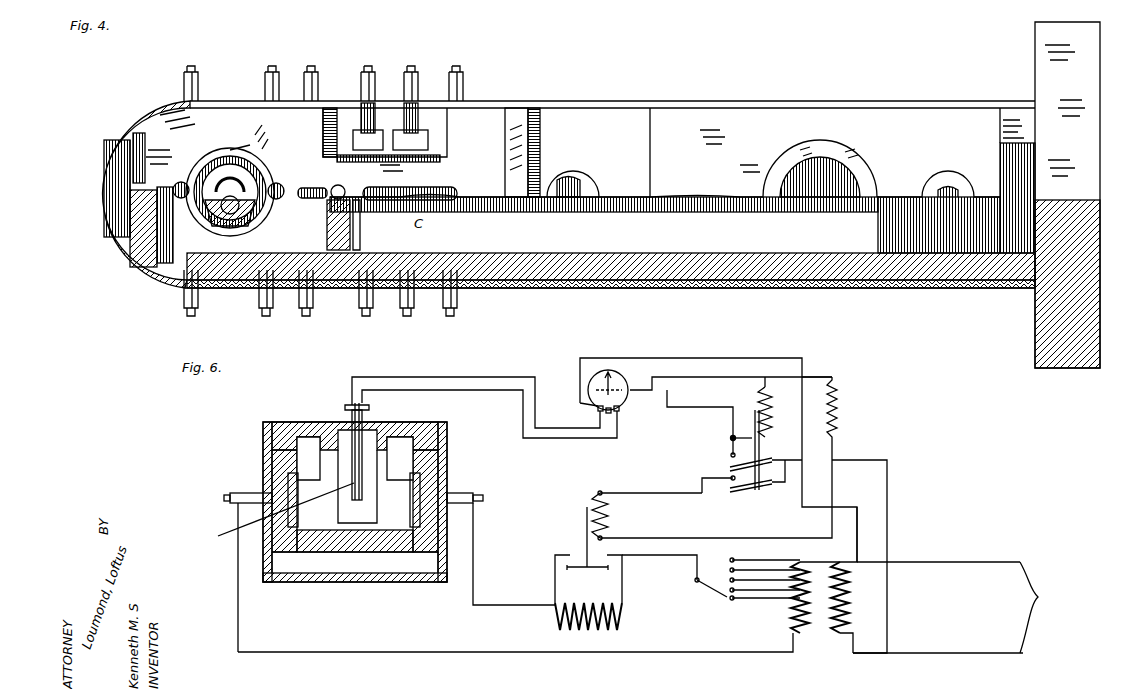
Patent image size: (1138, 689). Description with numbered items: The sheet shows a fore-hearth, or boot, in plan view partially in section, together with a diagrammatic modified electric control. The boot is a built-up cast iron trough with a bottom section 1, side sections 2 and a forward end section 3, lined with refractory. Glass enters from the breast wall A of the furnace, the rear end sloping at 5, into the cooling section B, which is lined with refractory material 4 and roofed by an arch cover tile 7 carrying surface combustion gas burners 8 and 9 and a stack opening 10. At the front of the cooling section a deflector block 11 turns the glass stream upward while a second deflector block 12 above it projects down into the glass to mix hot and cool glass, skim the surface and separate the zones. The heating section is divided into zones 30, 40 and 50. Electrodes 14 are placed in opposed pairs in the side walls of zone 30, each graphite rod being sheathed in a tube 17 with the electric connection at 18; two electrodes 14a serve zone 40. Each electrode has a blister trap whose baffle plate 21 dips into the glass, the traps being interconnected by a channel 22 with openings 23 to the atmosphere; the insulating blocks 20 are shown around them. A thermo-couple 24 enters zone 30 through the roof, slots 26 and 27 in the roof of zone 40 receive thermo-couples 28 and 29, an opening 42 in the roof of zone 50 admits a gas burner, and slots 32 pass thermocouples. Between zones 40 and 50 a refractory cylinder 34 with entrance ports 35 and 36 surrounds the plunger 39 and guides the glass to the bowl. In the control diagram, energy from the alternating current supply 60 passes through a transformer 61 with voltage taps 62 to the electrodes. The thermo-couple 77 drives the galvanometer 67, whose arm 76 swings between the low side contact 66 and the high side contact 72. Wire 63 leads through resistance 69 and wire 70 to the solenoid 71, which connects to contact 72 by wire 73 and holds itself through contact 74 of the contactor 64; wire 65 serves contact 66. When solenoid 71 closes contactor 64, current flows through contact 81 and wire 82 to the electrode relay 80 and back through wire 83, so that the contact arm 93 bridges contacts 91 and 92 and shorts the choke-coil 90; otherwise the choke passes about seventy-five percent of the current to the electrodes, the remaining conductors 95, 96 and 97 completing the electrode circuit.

In FIG. 6, the bottom section 1 is at (340, 590).
In FIG. 4, the side section 2 is at (612, 108).
In FIG. 6, the side section 2 is at (263, 560).
In FIG. 4, the forward end section 3 is at (92, 205).
In FIG. 4, the refractory lining 4 is at (694, 280).
In FIG. 4, the sloping rear end 5 is at (940, 240).
In FIG. 4, the arch cover tile 7 is at (742, 115).
In FIG. 4, the surface combustion gas burner 8 is at (568, 178).
In FIG. 4, the surface combustion gas burner 9 is at (948, 188).
In FIG. 4, the stack opening 10 is at (830, 160).
In FIG. 4, the deflector block 11 is at (552, 245).
In FIG. 4, the deflector block 12 is at (518, 125).
In FIG. 4, the electrode 14 is at (184, 300).
In FIG. 6, the electrode 14 is at (288, 478).
In FIG. 4, the electrode 14a is at (268, 310).
In FIG. 6, the electrode 14a is at (420, 488).
In FIG. 4, the tube 17 is at (184, 85).
In FIG. 6, the tube 17 is at (250, 503).
In FIG. 4, the electric connection 18 is at (187, 68).
In FIG. 6, the electric connection 18 is at (224, 498).
In FIG. 4, the insulating block 20 is at (408, 128).
In FIG. 6, the insulating block 20 is at (272, 456).
In FIG. 6, the baffle plate 21 is at (328, 432).
In FIG. 4, the channel 22 is at (366, 118).
In FIG. 6, the channel 22 is at (300, 432).
In FIG. 4, the opening 23 is at (445, 187).
In FIG. 4, the thermo-couple 24 is at (430, 172).
In FIG. 4, the slot 26 is at (420, 187).
In FIG. 4, the slot 27 is at (330, 200).
In FIG. 6, the slot 27 is at (352, 412).
In FIG. 4, the thermo-couple 28 is at (346, 188).
In FIG. 6, the thermo-couple 28 is at (369, 408).
In FIG. 4, the thermo-couple 29 is at (312, 186).
In FIG. 4, the zone 30 is at (470, 245).
In FIG. 4, the slot 32 is at (200, 180).
In FIG. 4, the cylinder 34 is at (236, 206).
In FIG. 4, the entrance port 35 is at (240, 200).
In FIG. 4, the entrance port 36 is at (242, 208).
In FIG. 4, the plunger 39 is at (228, 214).
In FIG. 4, the zone 40 is at (318, 310).
In FIG. 4, the opening 42 is at (133, 150).
In FIG. 4, the zone 50 is at (138, 270).
In FIG. 6, the alternating current supply 60 is at (955, 607).
In FIG. 6, the transformer 61 is at (858, 594).
In FIG. 6, the voltage tap 62 is at (710, 592).
In FIG. 6, the wire 63 is at (868, 460).
In FIG. 6, the contactor 64 is at (758, 484).
In FIG. 6, the wire 65 is at (684, 358).
In FIG. 6, the low side contact 66 is at (598, 408).
In FIG. 6, the galvanometer 67 is at (615, 385).
In FIG. 6, the resistance 69 is at (838, 404).
In FIG. 6, the wire 70 is at (822, 377).
In FIG. 6, the solenoid 71 is at (766, 405).
In FIG. 6, the high side contact 72 is at (618, 411).
In FIG. 6, the wire 73 is at (728, 377).
In FIG. 6, the contact 74 is at (730, 455).
In FIG. 6, the common tap or arm contact 76 is at (598, 372).
In FIG. 6, the thermo-couple 77 is at (226, 536).
In FIG. 6, the electrode relay 80 is at (578, 512).
In FIG. 6, the contact 81 is at (728, 480).
In FIG. 6, the wire 82 is at (646, 493).
In FIG. 6, the wire 83 is at (675, 538).
In FIG. 6, the choke-coil 90 is at (577, 630).
In FIG. 6, the contact 91 is at (570, 556).
In FIG. 6, the contact 92 is at (607, 555).
In FIG. 6, the contact arm 93 is at (596, 570).
In FIG. 6, the conductor 95 is at (738, 652).
In FIG. 6, the conductor 96 is at (492, 605).
In FIG. 6, the conductor 97 is at (680, 580).
In FIG. 4, the breast wall A is at (1100, 258).
In FIG. 4, the cooling section B is at (682, 180).